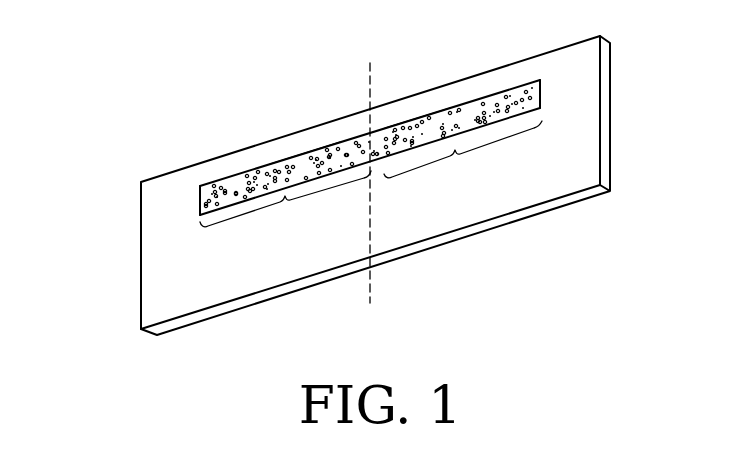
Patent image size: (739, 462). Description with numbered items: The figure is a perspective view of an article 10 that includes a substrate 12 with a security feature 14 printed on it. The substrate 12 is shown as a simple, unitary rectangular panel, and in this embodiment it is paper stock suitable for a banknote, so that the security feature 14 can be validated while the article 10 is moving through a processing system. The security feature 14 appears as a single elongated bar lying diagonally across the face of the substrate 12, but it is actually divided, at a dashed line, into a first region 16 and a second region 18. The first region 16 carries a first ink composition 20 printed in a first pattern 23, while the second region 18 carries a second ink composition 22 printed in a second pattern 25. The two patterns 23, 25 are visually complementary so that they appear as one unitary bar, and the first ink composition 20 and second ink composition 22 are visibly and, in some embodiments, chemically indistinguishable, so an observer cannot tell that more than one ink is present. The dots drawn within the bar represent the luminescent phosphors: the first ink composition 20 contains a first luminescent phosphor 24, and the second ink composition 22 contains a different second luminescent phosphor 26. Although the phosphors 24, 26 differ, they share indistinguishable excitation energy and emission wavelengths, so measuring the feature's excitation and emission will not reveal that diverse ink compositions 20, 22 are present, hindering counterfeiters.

The article 10 is at (332, 176).
The substrate 12 is at (155, 280).
The security feature 14 is at (372, 134).
The first region 16 is at (285, 208).
The second region 18 is at (463, 156).
The first ink composition 20 is at (308, 152).
The second ink composition 22 is at (418, 117).
The first pattern 23 is at (195, 203).
The first luminescent phosphor 24 is at (227, 185).
The second pattern 25 is at (547, 92).
The second luminescent phosphor 26 is at (468, 108).